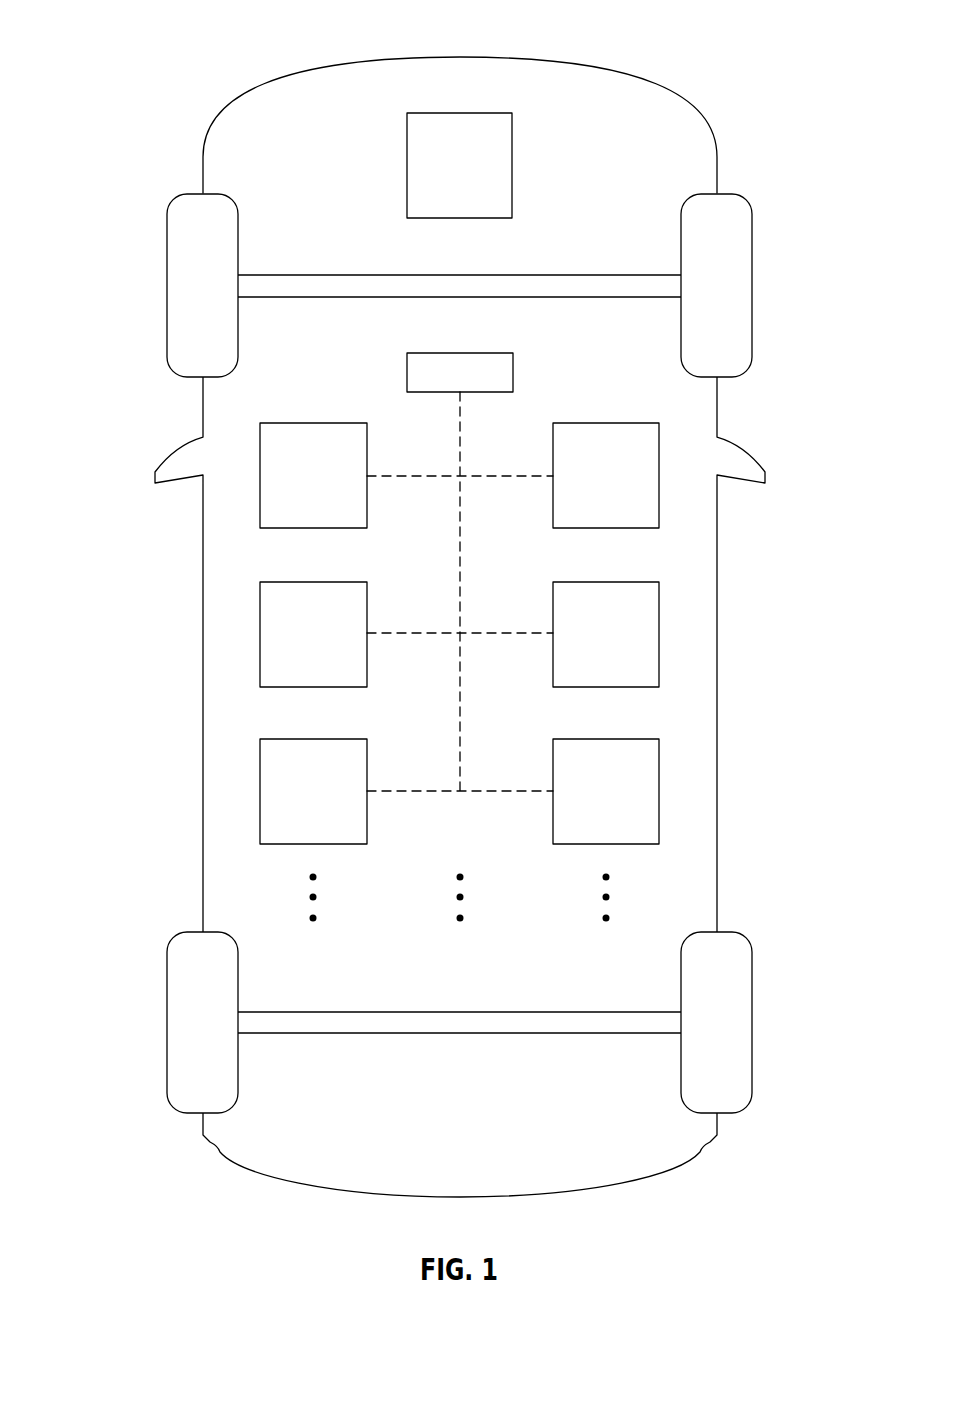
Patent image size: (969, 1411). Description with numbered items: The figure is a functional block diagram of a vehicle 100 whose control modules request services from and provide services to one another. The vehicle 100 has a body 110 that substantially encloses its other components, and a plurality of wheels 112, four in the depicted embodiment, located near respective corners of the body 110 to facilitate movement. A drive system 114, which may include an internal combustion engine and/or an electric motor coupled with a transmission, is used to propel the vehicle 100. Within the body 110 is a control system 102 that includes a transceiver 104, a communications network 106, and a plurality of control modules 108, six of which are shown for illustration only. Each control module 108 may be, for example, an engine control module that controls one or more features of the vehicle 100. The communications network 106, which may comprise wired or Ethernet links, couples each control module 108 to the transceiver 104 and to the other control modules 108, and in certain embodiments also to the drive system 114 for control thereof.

The vehicle 100 is at (180, 48).
The control system 102 is at (328, 340).
The transceiver 104 is at (459, 352).
The communications network 106 is at (461, 407).
The control module 108 is at (313, 422).
The body 110 is at (203, 663).
The wheel 112 is at (183, 287).
The drive system 114 is at (461, 113).